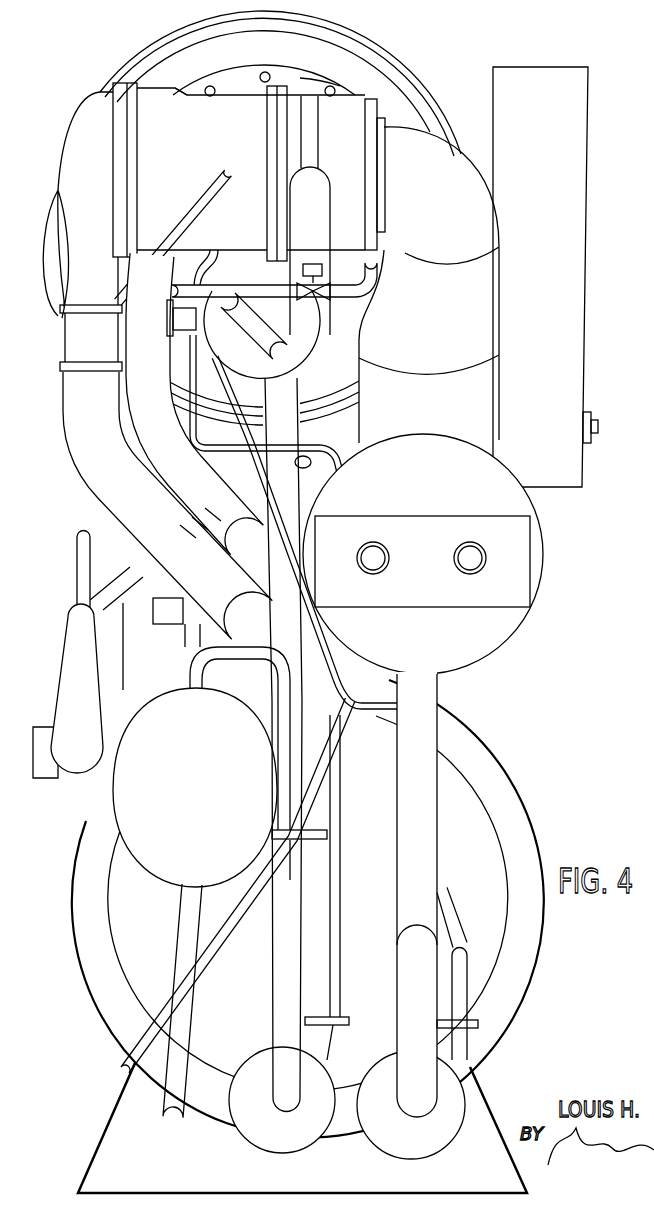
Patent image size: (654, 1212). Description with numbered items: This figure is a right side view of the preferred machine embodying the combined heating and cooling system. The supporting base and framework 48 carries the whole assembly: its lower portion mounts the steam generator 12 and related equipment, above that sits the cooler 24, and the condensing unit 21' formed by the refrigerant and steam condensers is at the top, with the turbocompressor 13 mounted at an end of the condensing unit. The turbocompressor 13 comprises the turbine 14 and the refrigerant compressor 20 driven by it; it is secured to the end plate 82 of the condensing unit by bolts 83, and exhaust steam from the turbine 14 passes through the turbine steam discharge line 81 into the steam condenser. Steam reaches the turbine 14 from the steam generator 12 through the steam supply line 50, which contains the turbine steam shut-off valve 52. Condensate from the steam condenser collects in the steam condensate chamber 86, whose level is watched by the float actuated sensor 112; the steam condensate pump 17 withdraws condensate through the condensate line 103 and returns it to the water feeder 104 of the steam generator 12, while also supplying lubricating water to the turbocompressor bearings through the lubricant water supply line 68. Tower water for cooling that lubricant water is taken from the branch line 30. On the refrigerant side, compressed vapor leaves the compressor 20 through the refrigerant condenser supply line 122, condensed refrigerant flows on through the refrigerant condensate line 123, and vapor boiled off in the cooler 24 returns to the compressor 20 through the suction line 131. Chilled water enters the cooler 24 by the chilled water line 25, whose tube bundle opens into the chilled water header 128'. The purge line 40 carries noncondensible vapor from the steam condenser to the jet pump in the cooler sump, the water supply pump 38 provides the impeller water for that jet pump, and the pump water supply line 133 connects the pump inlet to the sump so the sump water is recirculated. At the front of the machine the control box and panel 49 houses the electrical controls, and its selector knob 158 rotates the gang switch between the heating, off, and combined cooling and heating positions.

The steam generator 12 is at (372, 824).
The turbocompressor 13 is at (198, 93).
The turbine 14 is at (88, 177).
The steam condensate pump 17 is at (274, 1137).
The refrigerant compressor 20 is at (357, 177).
The condensing unit 21' is at (280, 218).
The cooler 24 is at (436, 490).
The chilled water line 25 is at (458, 567).
The branch line 30 is at (77, 565).
The water supply pump 38 is at (452, 1124).
The purge line 40 is at (225, 377).
The supporting base and framework 48 is at (332, 1180).
The control box and panel 49 is at (550, 227).
The steam supply line 50 is at (127, 534).
The turbine steam shut-off valve 52 is at (100, 349).
The lubricant water supply line 68 is at (173, 230).
The turbine steam discharge line 81 is at (300, 78).
The end plate 82 is at (277, 57).
The bolts 83 is at (262, 81).
The steam condensate chamber 86 is at (277, 284).
The condensate line 103 is at (284, 1077).
The water feeder 104 is at (207, 800).
The float actuated sensor 112 is at (241, 344).
The refrigerant condenser supply line 122 is at (319, 248).
The refrigerant condensate line 123 is at (90, 760).
The chilled water header 128' is at (422, 561).
The suction line 131 is at (454, 319).
The pump water supply line 133 is at (427, 1029).
The selector knob 158 is at (599, 427).